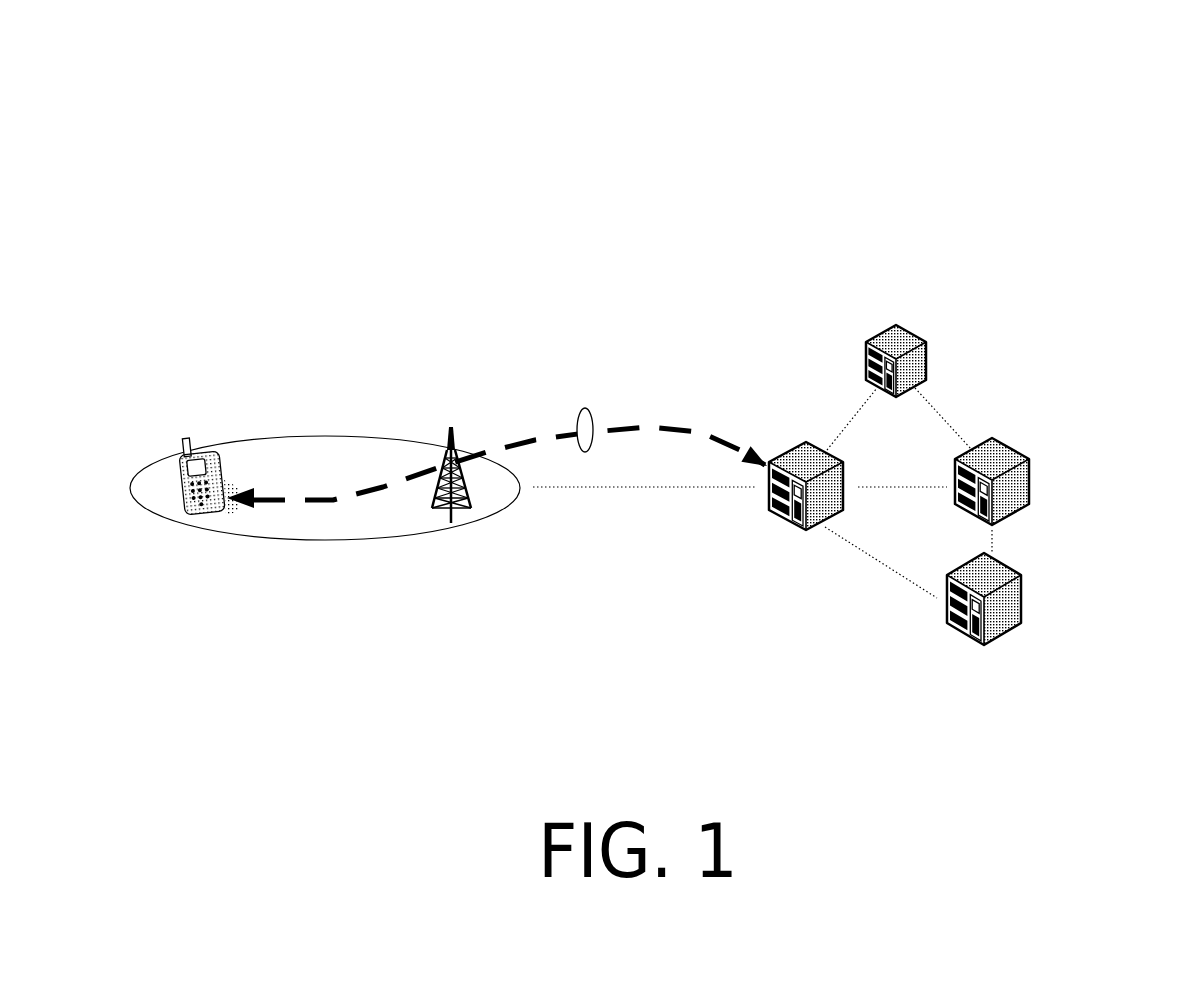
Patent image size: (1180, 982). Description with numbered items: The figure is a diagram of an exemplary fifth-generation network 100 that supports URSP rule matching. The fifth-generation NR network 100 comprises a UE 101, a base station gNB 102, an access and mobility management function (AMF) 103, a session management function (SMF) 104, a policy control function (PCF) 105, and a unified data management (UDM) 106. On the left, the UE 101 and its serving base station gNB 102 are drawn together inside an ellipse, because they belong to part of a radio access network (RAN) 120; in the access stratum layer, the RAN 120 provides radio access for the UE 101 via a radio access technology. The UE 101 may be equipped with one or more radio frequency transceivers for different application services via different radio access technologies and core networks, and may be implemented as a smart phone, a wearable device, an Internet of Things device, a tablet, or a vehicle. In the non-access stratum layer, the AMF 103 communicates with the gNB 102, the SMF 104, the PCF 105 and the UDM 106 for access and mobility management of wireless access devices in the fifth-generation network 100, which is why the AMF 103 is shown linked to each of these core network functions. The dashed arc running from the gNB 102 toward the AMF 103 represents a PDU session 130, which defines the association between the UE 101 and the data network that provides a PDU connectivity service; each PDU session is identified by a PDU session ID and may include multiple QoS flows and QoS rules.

The 5G network 100 is at (634, 84).
The UE 101 is at (190, 436).
The base station gNB 102 is at (451, 430).
The access and mobility management function (AMF) 103 is at (801, 438).
The session management function (SMF) 104 is at (1010, 456).
The policy control function (PCF) 105 is at (1021, 575).
The unified data management (UDM) 106 is at (927, 341).
The radio access network (RAN) 120 is at (345, 477).
The PDU session 130 is at (580, 410).